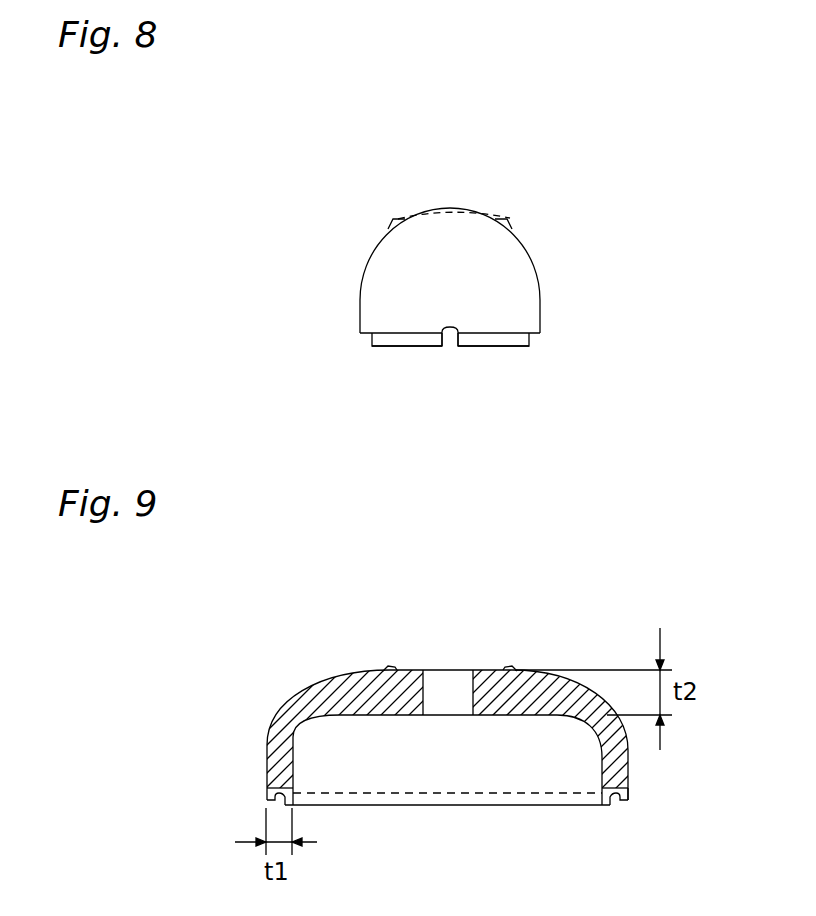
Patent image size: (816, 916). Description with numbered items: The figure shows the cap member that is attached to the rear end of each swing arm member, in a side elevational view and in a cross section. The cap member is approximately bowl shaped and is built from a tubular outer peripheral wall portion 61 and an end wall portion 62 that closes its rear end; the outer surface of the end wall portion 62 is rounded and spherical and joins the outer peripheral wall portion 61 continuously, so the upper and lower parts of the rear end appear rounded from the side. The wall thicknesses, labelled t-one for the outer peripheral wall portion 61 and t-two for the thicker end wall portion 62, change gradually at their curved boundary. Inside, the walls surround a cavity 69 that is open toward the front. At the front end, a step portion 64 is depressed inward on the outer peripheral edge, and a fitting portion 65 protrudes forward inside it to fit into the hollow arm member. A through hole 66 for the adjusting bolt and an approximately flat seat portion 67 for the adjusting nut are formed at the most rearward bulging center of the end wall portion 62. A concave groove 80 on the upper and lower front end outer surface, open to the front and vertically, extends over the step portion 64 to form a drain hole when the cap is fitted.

In FIG. 8, the outer peripheral wall portion 61 is at (359, 319).
In FIG. 9, the outer peripheral wall portion 61 is at (274, 763).
In FIG. 8, the end wall portion 62 is at (444, 224).
In FIG. 9, the end wall portion 62 is at (378, 673).
In FIG. 8, the step portion 64 is at (533, 337).
In FIG. 9, the step portion 64 is at (618, 795).
In FIG. 8, the fitting portion 65 is at (503, 344).
In FIG. 9, the fitting portion 65 is at (403, 807).
In FIG. 9, the through hole 66 is at (443, 678).
In FIG. 8, the seat portion 67 is at (471, 212).
In FIG. 9, the seat portion 67 is at (486, 675).
In FIG. 9, the cavity 69 is at (550, 768).
In FIG. 8, the concave groove 80 is at (448, 344).
In FIG. 9, the concave groove 80 is at (270, 795).